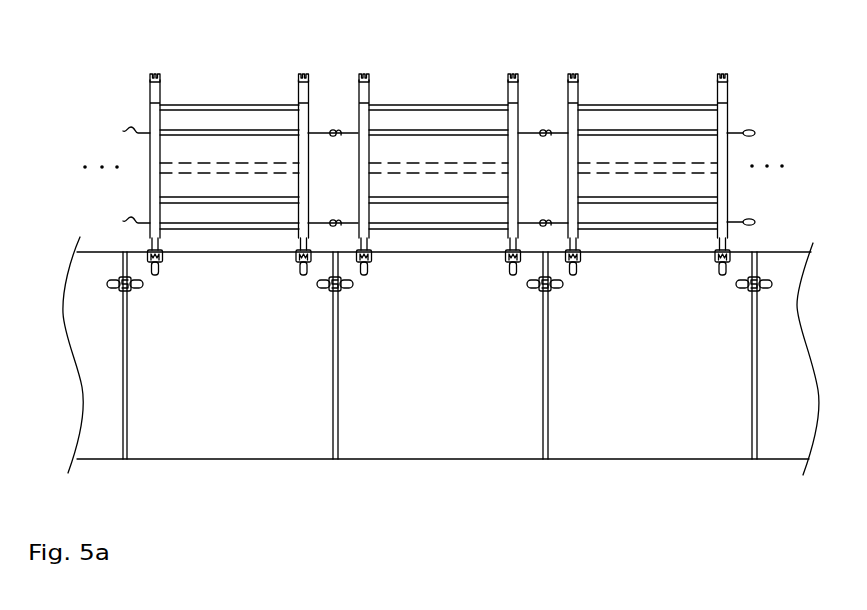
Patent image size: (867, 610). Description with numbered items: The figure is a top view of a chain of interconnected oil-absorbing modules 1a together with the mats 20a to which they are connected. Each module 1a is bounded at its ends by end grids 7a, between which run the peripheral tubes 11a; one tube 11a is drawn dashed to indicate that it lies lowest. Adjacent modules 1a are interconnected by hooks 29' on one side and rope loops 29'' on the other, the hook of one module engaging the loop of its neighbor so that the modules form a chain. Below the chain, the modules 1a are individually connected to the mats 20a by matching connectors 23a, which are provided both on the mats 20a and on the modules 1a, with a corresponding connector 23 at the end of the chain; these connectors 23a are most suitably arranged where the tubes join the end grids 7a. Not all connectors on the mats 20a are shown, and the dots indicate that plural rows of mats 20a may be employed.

The module 1a is at (438, 122).
The end grid 7a is at (150, 111).
The peripheral tube 11a is at (242, 162).
The connector 23a is at (162, 77).
The connecting element 23 is at (728, 77).
The hook 29' is at (315, 172).
The rope loop 29'' is at (776, 173).
The mat 20a is at (113, 354).